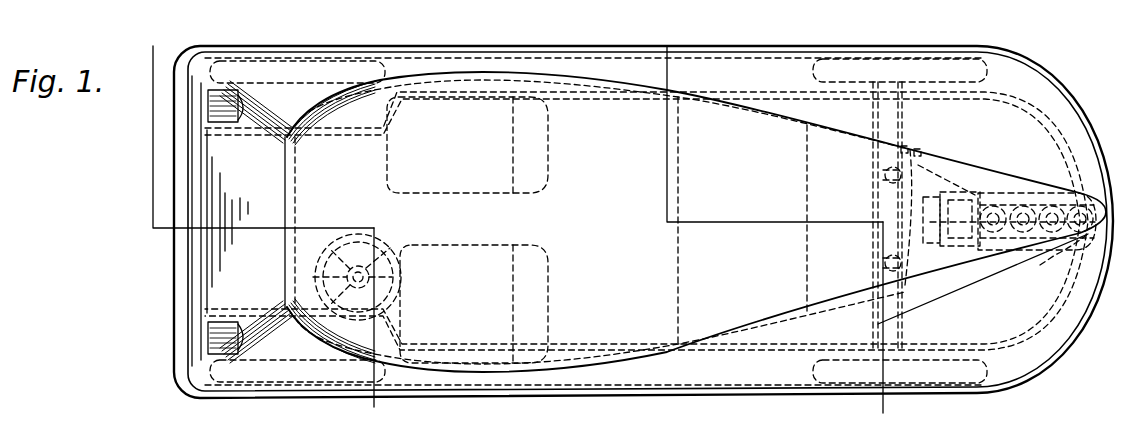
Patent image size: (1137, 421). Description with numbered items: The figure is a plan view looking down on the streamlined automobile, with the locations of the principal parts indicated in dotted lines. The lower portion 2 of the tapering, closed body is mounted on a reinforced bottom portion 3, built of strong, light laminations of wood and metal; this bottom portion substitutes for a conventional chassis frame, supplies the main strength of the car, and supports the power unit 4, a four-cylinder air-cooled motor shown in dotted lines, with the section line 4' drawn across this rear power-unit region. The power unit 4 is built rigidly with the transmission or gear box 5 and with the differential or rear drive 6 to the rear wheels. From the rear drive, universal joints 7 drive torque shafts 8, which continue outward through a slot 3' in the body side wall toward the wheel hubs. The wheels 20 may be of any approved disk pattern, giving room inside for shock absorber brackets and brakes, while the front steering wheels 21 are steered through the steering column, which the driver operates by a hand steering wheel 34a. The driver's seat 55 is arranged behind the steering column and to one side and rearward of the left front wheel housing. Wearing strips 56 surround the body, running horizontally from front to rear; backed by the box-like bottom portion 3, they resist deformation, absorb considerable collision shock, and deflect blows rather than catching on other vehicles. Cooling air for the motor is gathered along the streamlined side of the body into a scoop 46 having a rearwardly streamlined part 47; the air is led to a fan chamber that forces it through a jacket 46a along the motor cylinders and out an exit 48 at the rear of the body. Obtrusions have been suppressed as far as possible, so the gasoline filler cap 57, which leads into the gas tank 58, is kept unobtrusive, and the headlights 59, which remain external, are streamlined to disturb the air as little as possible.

The lower portion of the streamlined body 2 is at (727, 73).
The reinforced bottom portion 3 is at (618, 191).
The slot 3' is at (372, 315).
The power unit 4 is at (836, 158).
The section line 4'- 4' is at (890, 314).
The transmission or gear box 5 is at (975, 200).
The differential or rear drive 6 is at (928, 196).
The universal joints 7 is at (935, 163).
The torque shafts 8 is at (899, 128).
The wheels 20 is at (889, 70).
The front steering wheels 21 is at (255, 62).
The hand steering wheel 34a is at (388, 253).
The scoop 46 is at (857, 326).
The jacket 46a is at (1011, 189).
The rearwardly streamlined part 47 is at (933, 292).
The exit 48 is at (1074, 252).
The driver's seat 55 is at (468, 268).
The wearing strips 56 is at (178, 150).
The gasoline filler cap 57 is at (908, 152).
The gas tank 58 is at (948, 176).
The headlights 59 is at (208, 104).